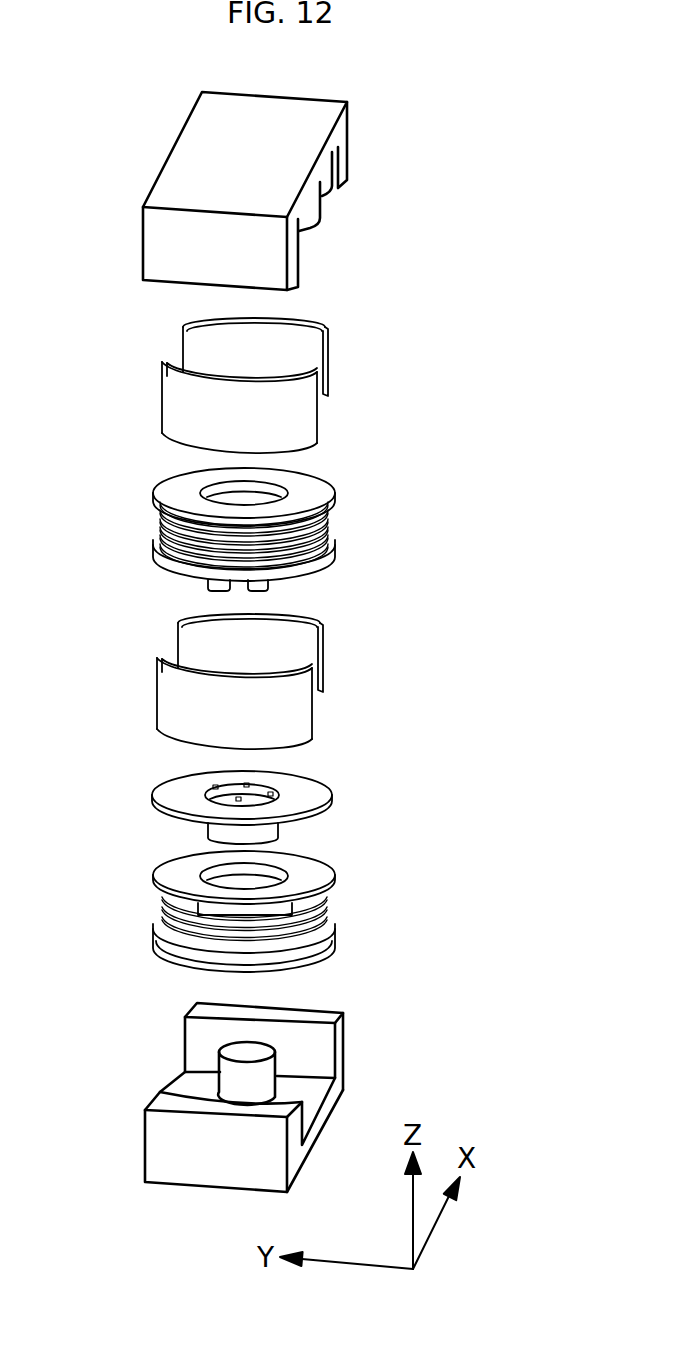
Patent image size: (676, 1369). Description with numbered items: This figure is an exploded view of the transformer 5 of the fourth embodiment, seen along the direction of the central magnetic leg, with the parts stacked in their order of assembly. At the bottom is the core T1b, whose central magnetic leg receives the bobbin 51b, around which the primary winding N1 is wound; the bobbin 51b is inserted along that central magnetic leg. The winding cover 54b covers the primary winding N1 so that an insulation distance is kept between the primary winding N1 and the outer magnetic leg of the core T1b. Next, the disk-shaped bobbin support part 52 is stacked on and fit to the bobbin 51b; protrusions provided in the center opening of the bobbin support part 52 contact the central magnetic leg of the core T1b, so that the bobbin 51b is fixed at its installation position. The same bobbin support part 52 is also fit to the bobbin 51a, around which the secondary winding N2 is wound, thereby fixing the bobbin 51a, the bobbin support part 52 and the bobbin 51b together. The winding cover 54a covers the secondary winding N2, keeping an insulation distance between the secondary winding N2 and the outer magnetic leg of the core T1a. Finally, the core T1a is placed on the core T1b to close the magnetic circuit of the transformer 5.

The transformer 5 is at (90, 127).
The core T1a is at (347, 145).
The winding cover 54a is at (328, 362).
The bobbin 51a is at (315, 488).
The secondary winding N2 is at (327, 528).
The winding cover 54b is at (322, 658).
The bobbin support part 52 is at (317, 795).
The bobbin 51b is at (307, 878).
The primary winding N1 is at (327, 923).
The core T1b is at (347, 1043).